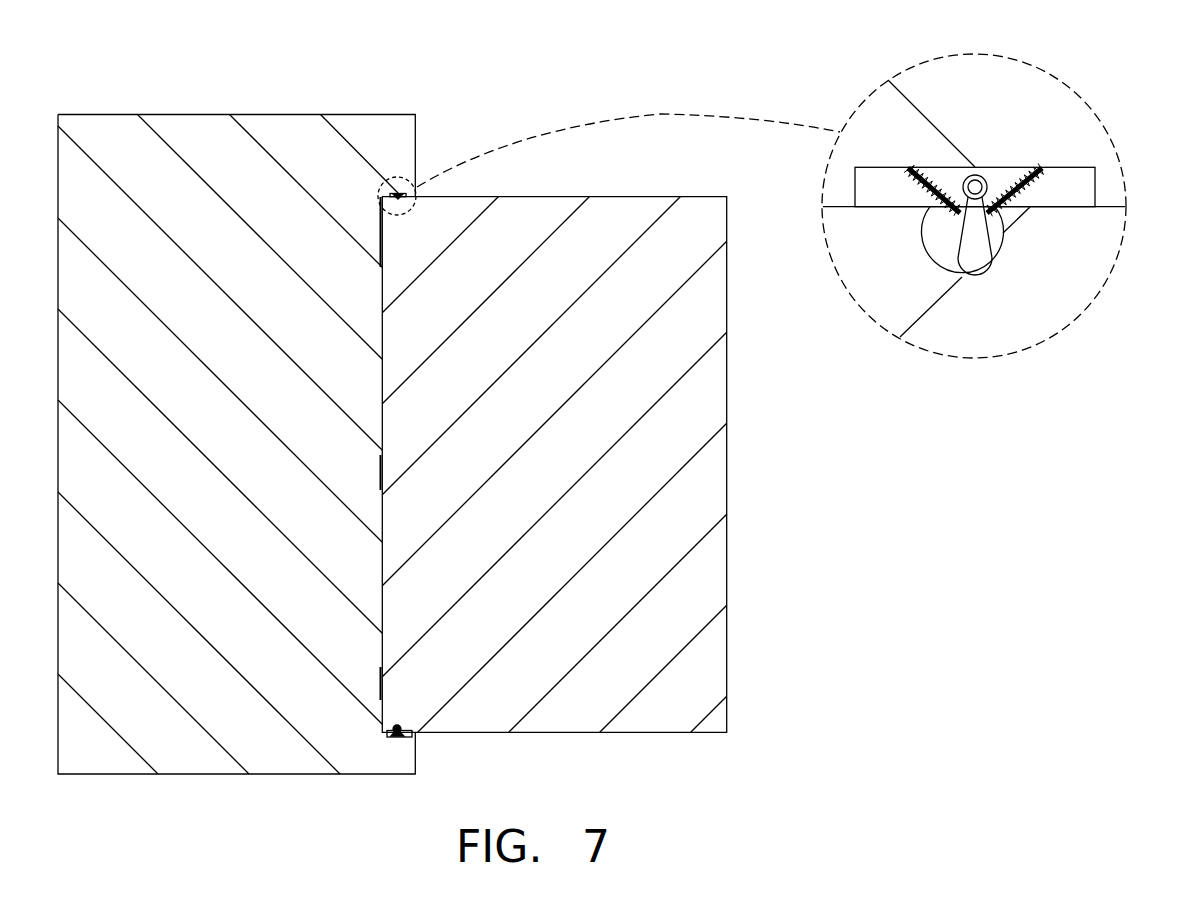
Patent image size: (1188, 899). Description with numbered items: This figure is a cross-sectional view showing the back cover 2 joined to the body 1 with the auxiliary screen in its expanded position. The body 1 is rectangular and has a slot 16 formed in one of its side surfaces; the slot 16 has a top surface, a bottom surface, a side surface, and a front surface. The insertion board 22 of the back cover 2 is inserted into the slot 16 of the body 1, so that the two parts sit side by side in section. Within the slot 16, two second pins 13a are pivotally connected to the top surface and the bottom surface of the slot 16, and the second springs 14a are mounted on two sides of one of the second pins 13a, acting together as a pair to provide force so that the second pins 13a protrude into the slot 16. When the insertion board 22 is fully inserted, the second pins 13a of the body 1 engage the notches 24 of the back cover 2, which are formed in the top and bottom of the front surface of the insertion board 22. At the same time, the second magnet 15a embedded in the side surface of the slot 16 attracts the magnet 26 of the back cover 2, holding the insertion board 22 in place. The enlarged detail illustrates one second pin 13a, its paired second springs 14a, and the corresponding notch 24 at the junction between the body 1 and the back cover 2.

The body 1 is at (222, 167).
The back cover 2 is at (655, 455).
The magnet 26 is at (382, 455).
The notches 24 is at (943, 227).
The second pins 13a is at (975, 247).
The second springs 14a is at (1033, 183).
The slot 16 is at (383, 597).
The second magnet 15a is at (382, 455).
The insertion board 22 is at (427, 680).